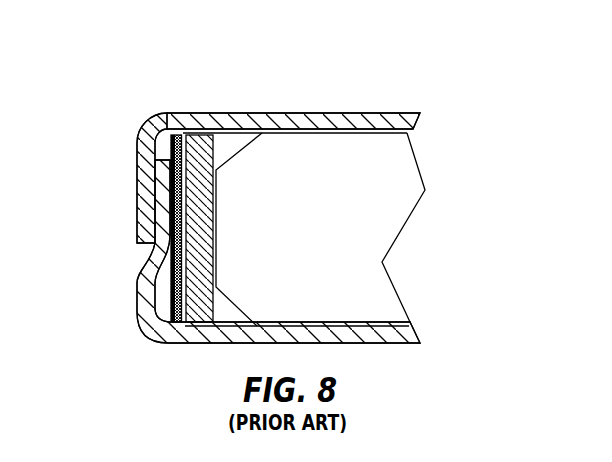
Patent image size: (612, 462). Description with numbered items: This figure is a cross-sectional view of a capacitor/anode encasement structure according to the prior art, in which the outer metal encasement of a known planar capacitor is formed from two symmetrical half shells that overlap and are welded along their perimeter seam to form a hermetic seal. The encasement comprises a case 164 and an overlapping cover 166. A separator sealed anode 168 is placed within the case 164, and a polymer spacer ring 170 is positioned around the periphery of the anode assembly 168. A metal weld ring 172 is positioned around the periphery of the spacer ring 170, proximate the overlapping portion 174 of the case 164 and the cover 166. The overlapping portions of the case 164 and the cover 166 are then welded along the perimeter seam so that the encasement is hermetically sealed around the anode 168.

The case 164 is at (150, 283).
The cover 166 is at (312, 120).
The separator sealed anode 168 is at (330, 207).
The polymer spacer ring 170 is at (237, 132).
The metal weld ring 172 is at (140, 130).
The overlapping portion 174 is at (140, 213).